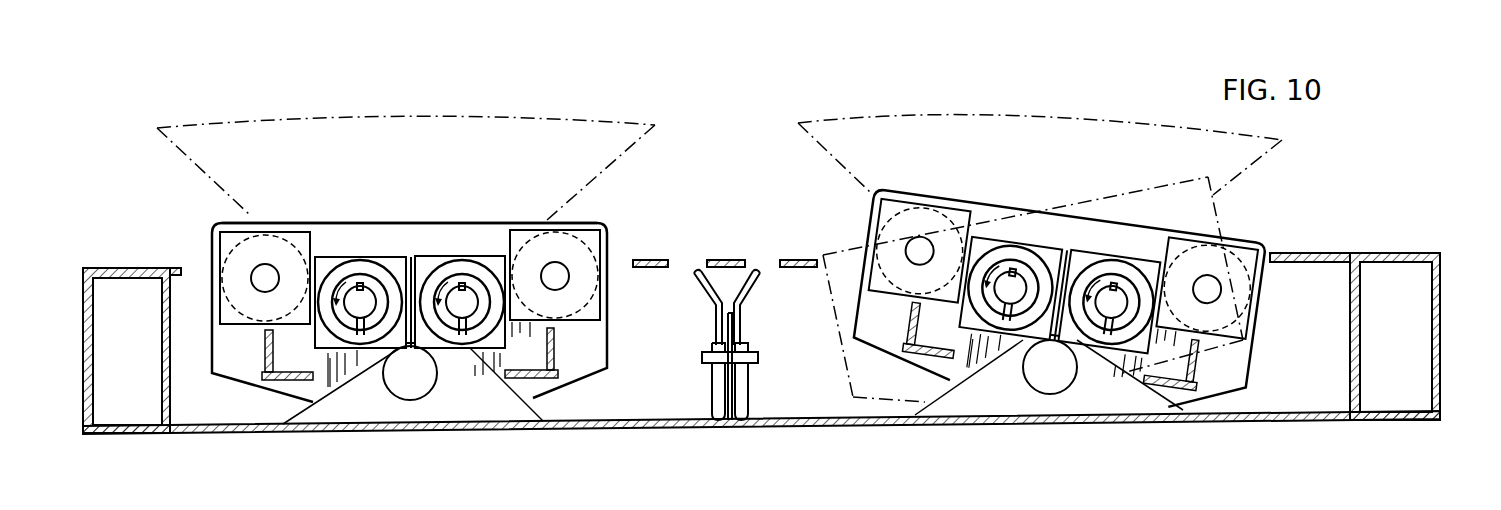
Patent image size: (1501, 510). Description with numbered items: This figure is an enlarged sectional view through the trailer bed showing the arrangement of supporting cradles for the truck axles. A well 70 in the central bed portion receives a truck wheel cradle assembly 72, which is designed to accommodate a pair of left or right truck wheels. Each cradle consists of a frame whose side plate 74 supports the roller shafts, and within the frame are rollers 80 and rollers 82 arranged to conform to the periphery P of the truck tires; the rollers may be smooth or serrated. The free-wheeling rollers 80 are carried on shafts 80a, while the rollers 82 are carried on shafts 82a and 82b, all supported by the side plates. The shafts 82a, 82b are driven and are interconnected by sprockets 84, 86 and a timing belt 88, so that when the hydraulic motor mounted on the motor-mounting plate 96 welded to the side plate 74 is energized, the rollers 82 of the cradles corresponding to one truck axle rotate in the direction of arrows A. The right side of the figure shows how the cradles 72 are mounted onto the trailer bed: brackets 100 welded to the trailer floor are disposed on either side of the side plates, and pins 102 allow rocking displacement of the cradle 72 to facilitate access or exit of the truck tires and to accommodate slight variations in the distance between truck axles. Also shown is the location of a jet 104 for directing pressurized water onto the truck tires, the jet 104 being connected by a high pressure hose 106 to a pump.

The well 70 is at (194, 282).
The truck wheel cradle assembly 72 is at (603, 210).
The side plate 74 is at (425, 236).
The free-wheeling roller 80 is at (291, 250).
The shaft 80a is at (261, 264).
The roller 82 is at (333, 265).
The shaft 82a is at (356, 309).
The shaft 82b is at (457, 309).
The sprocket 84 is at (333, 325).
The sprocket 86 is at (493, 323).
The timing belt 88 is at (390, 257).
The hydraulic motor-mounting plate 96 is at (268, 387).
The bracket 100 is at (1100, 396).
The pin 102 is at (1053, 382).
The jet 104 is at (695, 270).
The high pressure hose 106 is at (711, 418).
The periphery of the truck tires P is at (645, 142).
The arrows A is at (1097, 277).